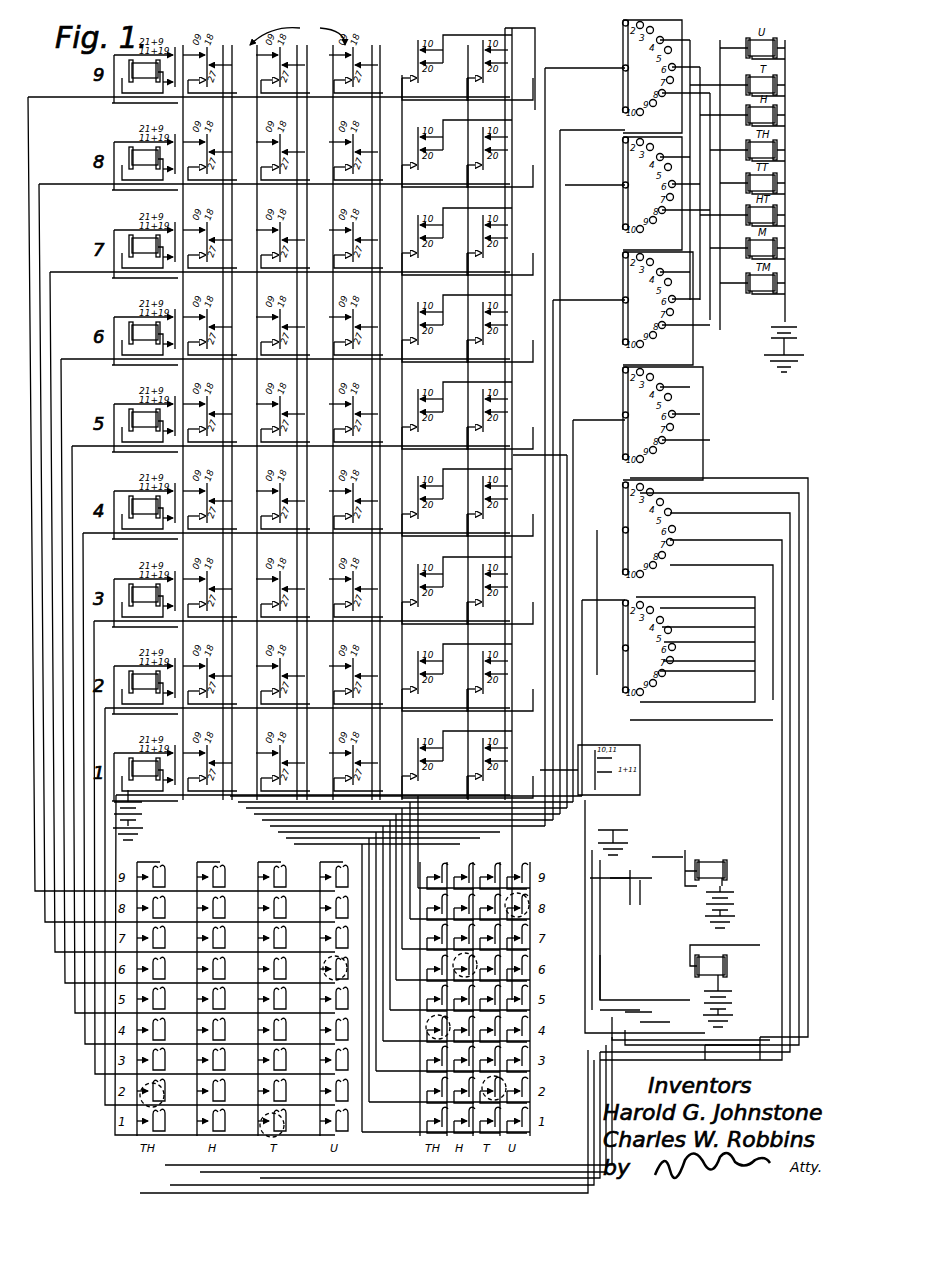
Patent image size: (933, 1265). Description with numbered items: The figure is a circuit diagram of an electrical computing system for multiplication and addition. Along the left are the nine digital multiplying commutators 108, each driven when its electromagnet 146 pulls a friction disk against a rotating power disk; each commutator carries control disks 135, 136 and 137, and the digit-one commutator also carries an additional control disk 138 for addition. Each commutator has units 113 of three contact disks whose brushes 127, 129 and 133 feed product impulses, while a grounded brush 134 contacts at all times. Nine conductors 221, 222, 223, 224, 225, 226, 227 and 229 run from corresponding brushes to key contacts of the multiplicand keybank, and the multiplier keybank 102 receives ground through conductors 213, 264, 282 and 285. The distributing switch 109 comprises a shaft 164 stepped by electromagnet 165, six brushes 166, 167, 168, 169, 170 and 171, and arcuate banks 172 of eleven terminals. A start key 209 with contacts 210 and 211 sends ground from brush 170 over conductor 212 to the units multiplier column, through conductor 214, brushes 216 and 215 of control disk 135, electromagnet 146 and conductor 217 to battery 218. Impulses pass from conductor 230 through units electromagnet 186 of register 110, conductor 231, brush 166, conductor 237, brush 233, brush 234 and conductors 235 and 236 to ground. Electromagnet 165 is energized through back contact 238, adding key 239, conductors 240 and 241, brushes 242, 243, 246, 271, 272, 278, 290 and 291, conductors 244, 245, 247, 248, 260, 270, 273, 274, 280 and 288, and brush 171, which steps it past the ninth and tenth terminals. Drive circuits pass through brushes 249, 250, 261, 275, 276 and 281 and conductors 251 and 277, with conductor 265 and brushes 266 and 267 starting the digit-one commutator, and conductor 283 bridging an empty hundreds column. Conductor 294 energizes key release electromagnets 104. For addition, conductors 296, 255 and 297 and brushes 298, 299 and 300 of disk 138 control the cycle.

The multiplier keybank 102 is at (110, 1145).
The key release electromagnets 104 is at (725, 965).
The multiplying commutators 108 is at (520, 72).
The distributing switch 109 is at (580, 55).
The register 110 is at (790, 210).
The units of three contact disks 113 is at (319, 18).
The brush 127 is at (260, 310).
The brush 129 is at (330, 315).
The brush 133 is at (325, 360).
The grounded brush 134 is at (255, 360).
The control disk 135 is at (180, 47).
The control disk 136 is at (420, 50).
The control disk 137 is at (475, 47).
The additional control disk 138 is at (540, 745).
The electromagnets 146 is at (135, 110).
The shaft 164 is at (625, 65).
The electromagnet 165 is at (715, 862).
The brush 166 is at (625, 95).
The brush 167 is at (620, 180).
The brush 168 is at (620, 320).
The brush 169 is at (620, 440).
The fifth brush 170 is at (625, 530).
The sixth brush 171 is at (620, 615).
The arcuate banks 172 is at (700, 40).
The units electromagnet 186 is at (760, 60).
The start key 209 is at (650, 1012).
The contact 210 is at (650, 1025).
The contact 211 is at (640, 1005).
The conductor 212 is at (775, 478).
The conductor 213 is at (612, 1060).
The conductor 214 is at (65, 355).
The upper brush 215 is at (150, 315).
The lower brush 216 is at (170, 372).
The conductor 217 is at (120, 395).
The battery 218 is at (165, 835).
The conductor 221 is at (405, 828).
The conductor 222 is at (415, 842).
The conductor 223 is at (460, 845).
The conductor 224 is at (310, 828).
The conductor 225 is at (320, 810).
The conductor 226 is at (215, 860).
The conductor 227 is at (240, 640).
The conductor 229 is at (200, 845).
The conductor 230 is at (785, 140).
The conductor 231 is at (690, 30).
The brush 233 is at (390, 315).
The brush 234 is at (490, 325).
The conductor 235 is at (335, 340).
The conductor 236 is at (200, 465).
The conductor 237 is at (570, 165).
The back contact 238 is at (685, 855).
The adding key 239 is at (660, 910).
The conductor 240 is at (715, 815).
The conductor 241 is at (640, 770).
The brush 242 is at (395, 360).
The brush 243 is at (400, 340).
The conductor 244 is at (545, 407).
The conductor 245 is at (700, 600).
The upper right hand brush 246 is at (490, 310).
The conductor 247 is at (705, 600).
The conductor 248 is at (545, 455).
The upper right hand brush 249 is at (545, 337).
The brush 250 is at (545, 374).
The conductor 251 is at (545, 390).
The conductor 255 is at (675, 960).
The conductor 260 is at (720, 610).
The brush 261 is at (545, 357).
The conductor 264 is at (710, 493).
The conductor 265 is at (115, 1120).
The brush 266 is at (140, 805).
The brush 267 is at (175, 760).
The conductor 270 is at (535, 670).
The upper right hand brush 271 is at (400, 710).
The brush 272 is at (395, 808).
The conductor 273 is at (685, 640).
The conductor 274 is at (525, 690).
The upper right hand brush 275 is at (505, 720).
The brush 276 is at (485, 780).
The conductor 277 is at (300, 858).
The lower right hand brush 278 is at (400, 735).
The conductor 280 is at (712, 640).
The lower right hand brush 281 is at (500, 752).
The conductor 282 is at (770, 530).
The conductor 283 is at (590, 945).
The conductor 285 is at (770, 548).
The conductor 288 is at (645, 690).
The lower right hand brush 290 is at (425, 675).
The brush 291 is at (420, 710).
The conductor 294 is at (770, 820).
The conductor 296 is at (640, 880).
The conductor 297 is at (718, 797).
The upper right hand brush 298 is at (555, 760).
The brush 299 is at (580, 830).
The lower right hand brush 300 is at (595, 760).